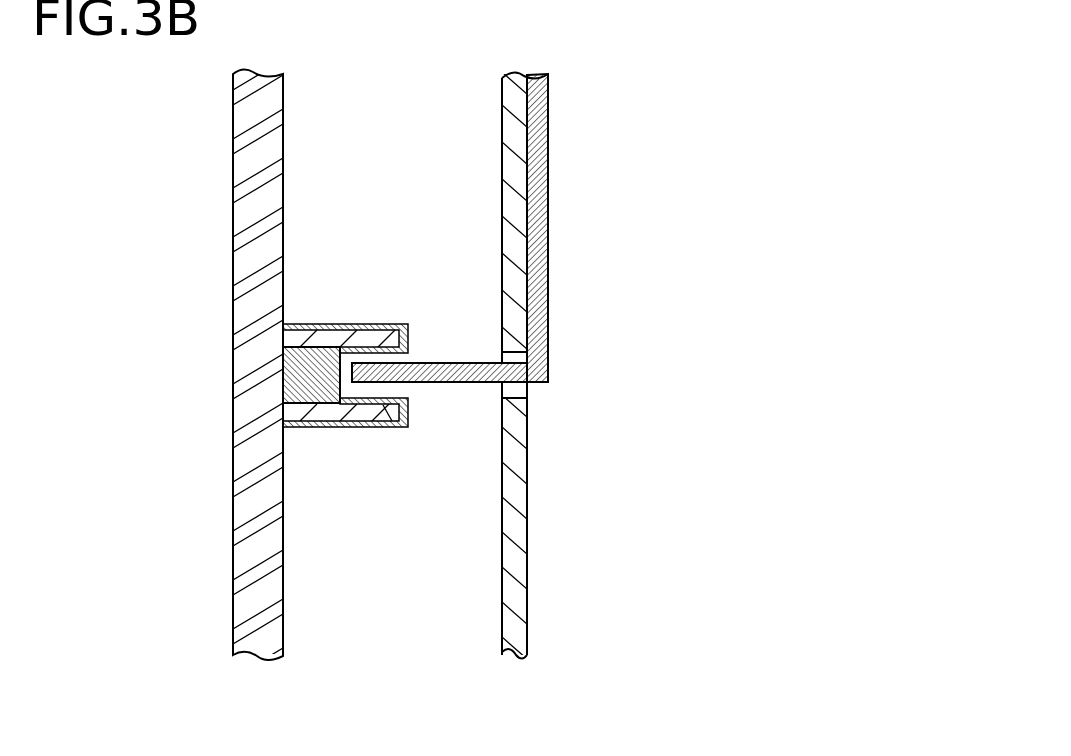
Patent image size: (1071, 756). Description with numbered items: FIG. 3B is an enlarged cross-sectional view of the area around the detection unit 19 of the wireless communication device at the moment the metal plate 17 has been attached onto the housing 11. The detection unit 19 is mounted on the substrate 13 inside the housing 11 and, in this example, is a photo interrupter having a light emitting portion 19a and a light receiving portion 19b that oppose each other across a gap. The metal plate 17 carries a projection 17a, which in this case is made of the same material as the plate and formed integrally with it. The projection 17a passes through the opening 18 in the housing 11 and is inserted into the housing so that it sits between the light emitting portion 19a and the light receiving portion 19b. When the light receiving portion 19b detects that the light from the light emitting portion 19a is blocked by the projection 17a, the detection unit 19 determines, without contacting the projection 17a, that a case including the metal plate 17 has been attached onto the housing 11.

The housing 11 is at (528, 611).
The substrate 13 is at (233, 214).
The metal plate 17 is at (524, 288).
The projection 17a is at (452, 384).
The opening 18 is at (522, 395).
The detection unit 19 is at (345, 369).
The light emitting portion 19a is at (371, 324).
The light receiving portion 19b is at (385, 428).